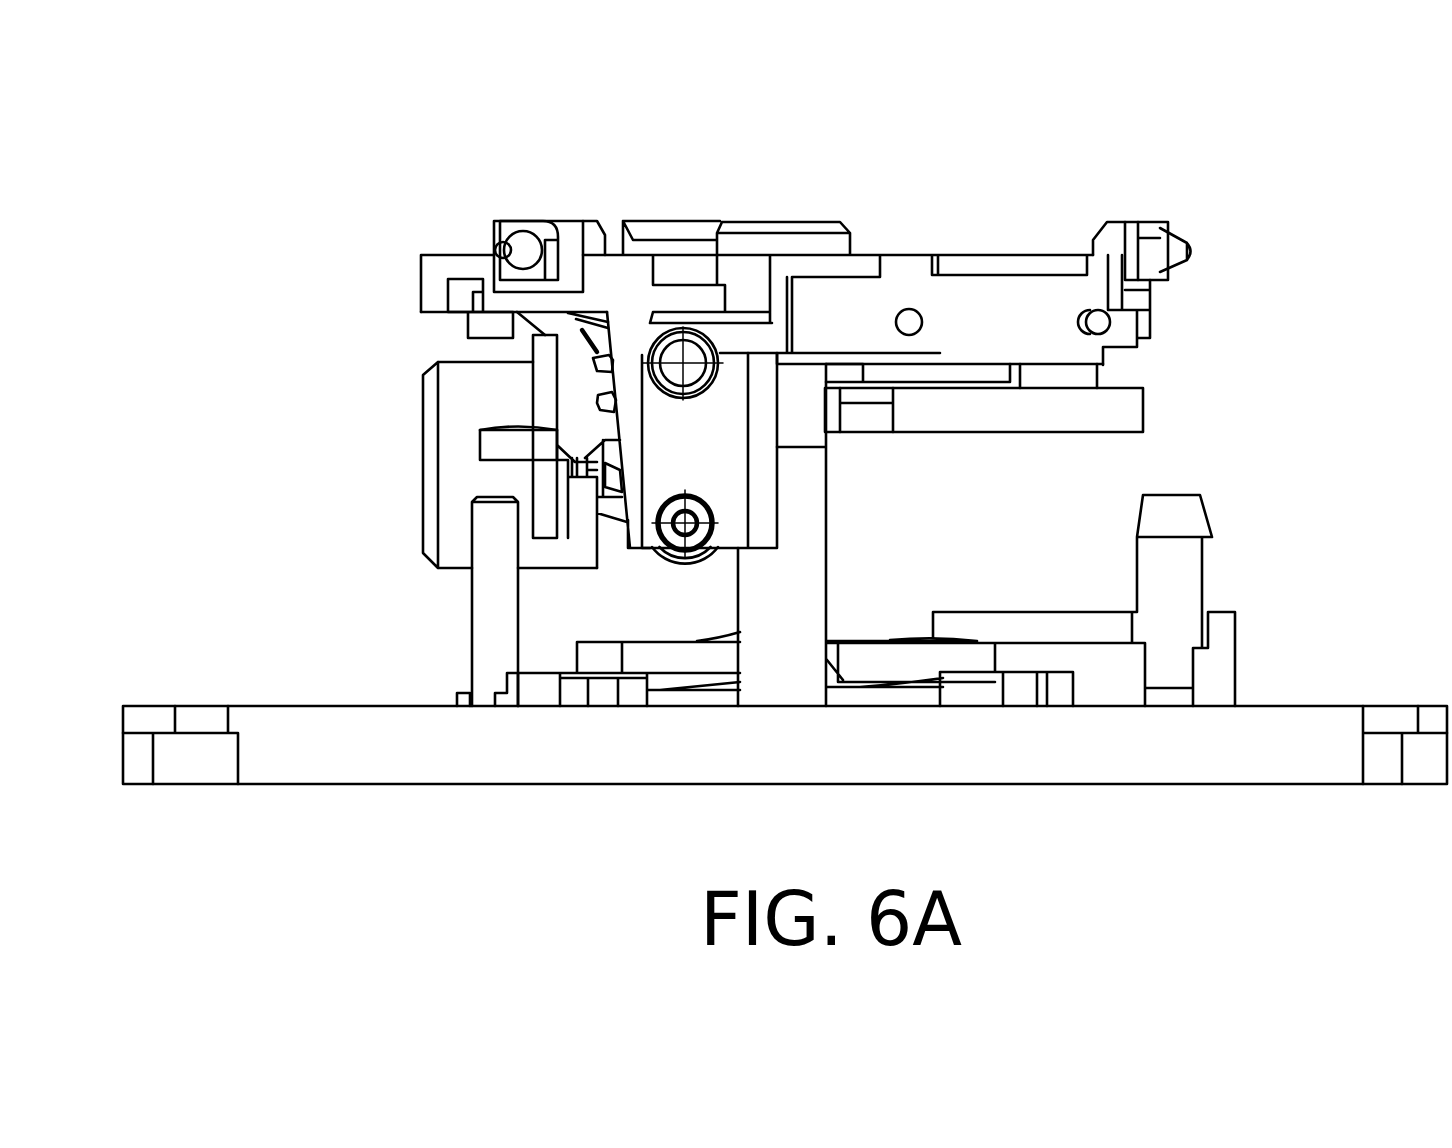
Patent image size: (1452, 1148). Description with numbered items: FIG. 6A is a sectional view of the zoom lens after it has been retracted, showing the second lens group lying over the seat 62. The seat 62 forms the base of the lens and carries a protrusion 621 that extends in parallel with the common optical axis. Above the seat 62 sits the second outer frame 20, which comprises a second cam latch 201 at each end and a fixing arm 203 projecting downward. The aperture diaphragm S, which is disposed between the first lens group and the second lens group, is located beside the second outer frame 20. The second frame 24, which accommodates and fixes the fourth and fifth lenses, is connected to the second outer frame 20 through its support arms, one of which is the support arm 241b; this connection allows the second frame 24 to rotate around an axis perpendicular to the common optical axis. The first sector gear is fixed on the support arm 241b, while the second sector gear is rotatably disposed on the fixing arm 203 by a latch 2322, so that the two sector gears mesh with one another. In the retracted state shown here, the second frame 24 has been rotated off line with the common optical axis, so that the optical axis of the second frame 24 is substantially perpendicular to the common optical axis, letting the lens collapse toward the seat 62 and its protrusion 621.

The second cam latch 201 is at (525, 255).
The second outer frame 20 is at (985, 310).
The aperture diaphragm S is at (1130, 405).
The fixing arm 203 is at (665, 422).
The support arm 241b is at (560, 440).
The second frame 24 is at (455, 540).
The latch 2322 is at (700, 517).
The protrusion 621 is at (805, 573).
The seat 62 is at (1305, 740).